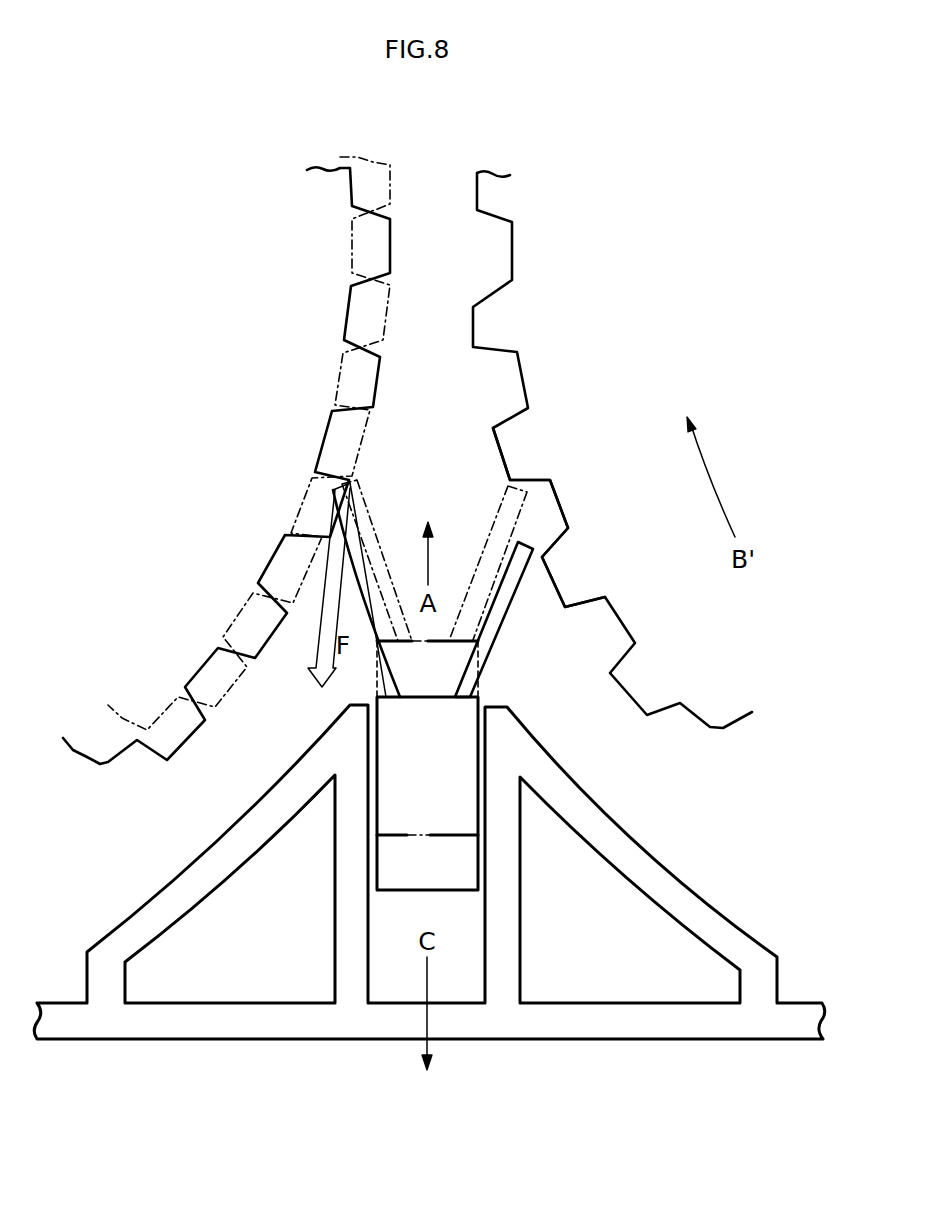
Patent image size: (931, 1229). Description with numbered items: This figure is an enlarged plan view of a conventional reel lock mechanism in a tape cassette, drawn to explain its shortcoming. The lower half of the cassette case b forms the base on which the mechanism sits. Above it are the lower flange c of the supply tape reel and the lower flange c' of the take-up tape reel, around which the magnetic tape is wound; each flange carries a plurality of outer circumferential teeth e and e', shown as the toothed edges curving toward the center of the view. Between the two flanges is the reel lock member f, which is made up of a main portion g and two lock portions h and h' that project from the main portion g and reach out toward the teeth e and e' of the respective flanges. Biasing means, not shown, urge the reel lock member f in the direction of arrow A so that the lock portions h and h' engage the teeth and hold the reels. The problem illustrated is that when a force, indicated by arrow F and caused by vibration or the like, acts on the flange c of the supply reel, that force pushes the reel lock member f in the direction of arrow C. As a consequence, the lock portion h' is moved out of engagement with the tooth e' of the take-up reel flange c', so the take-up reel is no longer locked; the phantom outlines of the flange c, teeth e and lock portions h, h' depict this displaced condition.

The lower flange of supply tape reel c is at (246, 465).
The lower flange of take-up tape reel c' is at (590, 449).
The outer circumferential teeth e is at (269, 476).
The outer circumferential teeth e' is at (532, 522).
The lock portion h is at (372, 575).
The lock portion h' is at (533, 587).
The reel lock member f is at (480, 689).
The main portion g is at (393, 837).
The lower half of cassette case b is at (693, 1030).